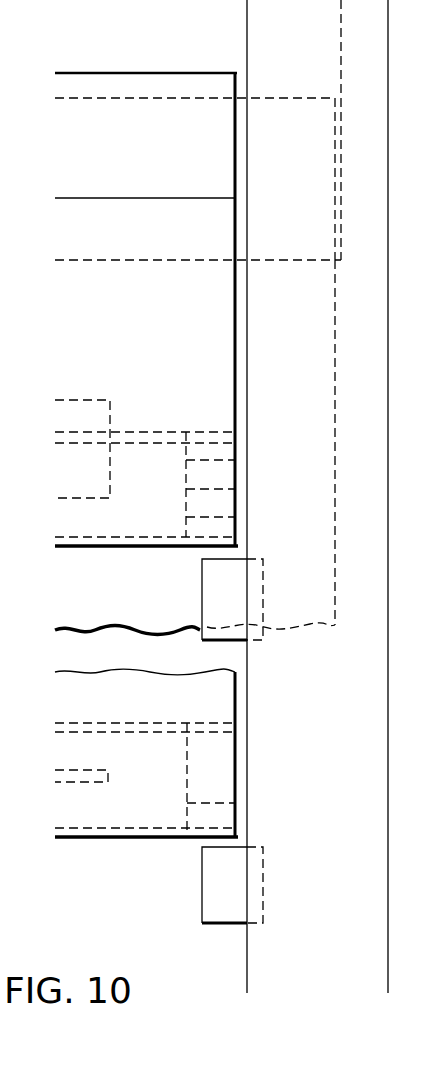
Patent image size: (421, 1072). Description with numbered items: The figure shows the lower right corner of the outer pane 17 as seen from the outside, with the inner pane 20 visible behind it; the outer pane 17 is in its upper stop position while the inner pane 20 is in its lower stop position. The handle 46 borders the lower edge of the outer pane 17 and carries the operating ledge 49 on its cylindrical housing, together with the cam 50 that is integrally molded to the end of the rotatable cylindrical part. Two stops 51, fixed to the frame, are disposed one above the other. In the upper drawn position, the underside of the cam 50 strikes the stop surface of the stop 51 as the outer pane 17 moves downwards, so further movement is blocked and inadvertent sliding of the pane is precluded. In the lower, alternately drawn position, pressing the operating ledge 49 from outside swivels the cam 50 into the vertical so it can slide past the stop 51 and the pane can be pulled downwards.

The outer pane 17 is at (111, 258).
The inner pane 20 is at (136, 97).
The handle 46 is at (88, 549).
The operating ledge 49 is at (80, 398).
The cam 50 is at (207, 460).
The stop 51 is at (203, 596).